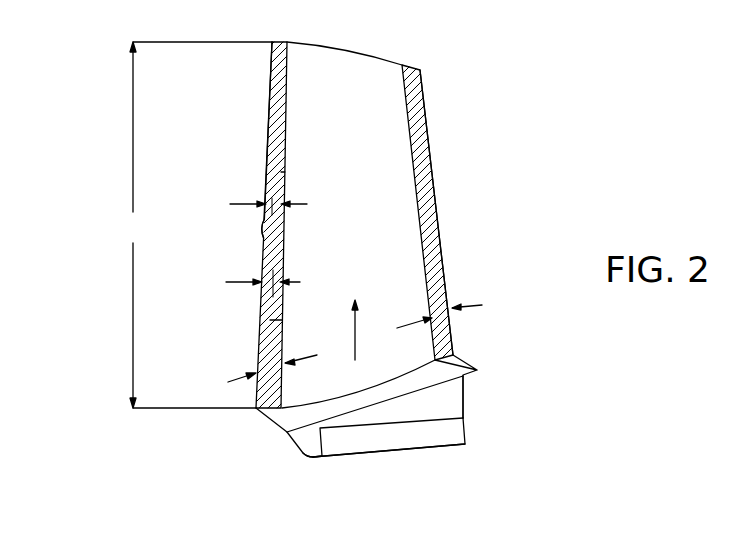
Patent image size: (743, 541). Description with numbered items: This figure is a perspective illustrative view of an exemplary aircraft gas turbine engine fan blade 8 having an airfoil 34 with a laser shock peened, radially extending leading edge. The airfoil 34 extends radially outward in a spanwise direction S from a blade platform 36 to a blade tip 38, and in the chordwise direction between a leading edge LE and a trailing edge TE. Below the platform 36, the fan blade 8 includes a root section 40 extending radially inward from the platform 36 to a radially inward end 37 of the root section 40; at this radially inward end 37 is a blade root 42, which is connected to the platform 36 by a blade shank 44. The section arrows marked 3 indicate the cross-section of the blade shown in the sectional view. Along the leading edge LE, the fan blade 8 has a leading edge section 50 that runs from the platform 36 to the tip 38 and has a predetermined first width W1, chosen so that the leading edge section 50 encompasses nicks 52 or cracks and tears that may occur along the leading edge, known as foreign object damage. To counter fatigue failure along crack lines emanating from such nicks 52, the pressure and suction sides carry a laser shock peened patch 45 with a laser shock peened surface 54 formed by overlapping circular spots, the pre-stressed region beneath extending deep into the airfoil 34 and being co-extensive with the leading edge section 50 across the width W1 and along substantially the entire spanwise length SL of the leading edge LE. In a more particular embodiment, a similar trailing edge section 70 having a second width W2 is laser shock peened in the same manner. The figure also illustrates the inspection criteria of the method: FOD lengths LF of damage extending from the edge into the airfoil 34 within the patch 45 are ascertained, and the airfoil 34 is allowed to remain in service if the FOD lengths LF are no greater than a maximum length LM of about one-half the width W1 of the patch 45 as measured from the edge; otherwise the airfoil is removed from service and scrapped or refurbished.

The fan blade 8 is at (369, 256).
The airfoil 34 is at (353, 225).
The blade platform 36 is at (478, 371).
The radially inward end 37 is at (396, 452).
The blade tip 38 is at (353, 50).
The root section 40 is at (463, 424).
The blade root 42 is at (303, 444).
The blade shank 44 is at (467, 402).
The laser shock peened patch 45 is at (272, 327).
The leading edge section 50 is at (262, 315).
The nicks 52 is at (262, 229).
The laser shock peened surface 54 is at (412, 117).
The trailing edge section 70 is at (440, 268).
The leading edge LE is at (272, 84).
The trailing edge TE is at (430, 109).
The spanwise length SL is at (195, 225).
The FOD lengths LF is at (283, 206).
The maximum length LM is at (285, 284).
The first width W1 is at (228, 382).
The second width W2 is at (482, 305).
The spanwise direction S is at (357, 337).
The section line 3- 3 is at (492, 182).